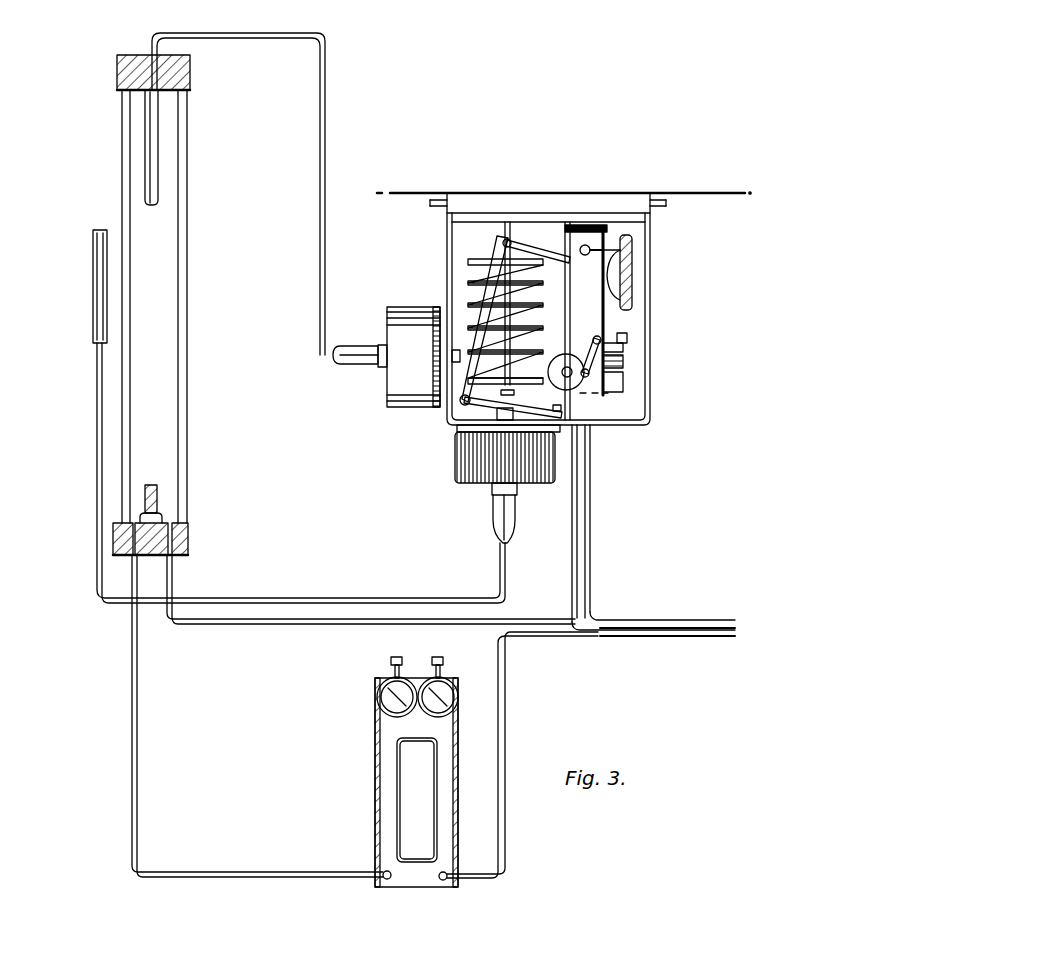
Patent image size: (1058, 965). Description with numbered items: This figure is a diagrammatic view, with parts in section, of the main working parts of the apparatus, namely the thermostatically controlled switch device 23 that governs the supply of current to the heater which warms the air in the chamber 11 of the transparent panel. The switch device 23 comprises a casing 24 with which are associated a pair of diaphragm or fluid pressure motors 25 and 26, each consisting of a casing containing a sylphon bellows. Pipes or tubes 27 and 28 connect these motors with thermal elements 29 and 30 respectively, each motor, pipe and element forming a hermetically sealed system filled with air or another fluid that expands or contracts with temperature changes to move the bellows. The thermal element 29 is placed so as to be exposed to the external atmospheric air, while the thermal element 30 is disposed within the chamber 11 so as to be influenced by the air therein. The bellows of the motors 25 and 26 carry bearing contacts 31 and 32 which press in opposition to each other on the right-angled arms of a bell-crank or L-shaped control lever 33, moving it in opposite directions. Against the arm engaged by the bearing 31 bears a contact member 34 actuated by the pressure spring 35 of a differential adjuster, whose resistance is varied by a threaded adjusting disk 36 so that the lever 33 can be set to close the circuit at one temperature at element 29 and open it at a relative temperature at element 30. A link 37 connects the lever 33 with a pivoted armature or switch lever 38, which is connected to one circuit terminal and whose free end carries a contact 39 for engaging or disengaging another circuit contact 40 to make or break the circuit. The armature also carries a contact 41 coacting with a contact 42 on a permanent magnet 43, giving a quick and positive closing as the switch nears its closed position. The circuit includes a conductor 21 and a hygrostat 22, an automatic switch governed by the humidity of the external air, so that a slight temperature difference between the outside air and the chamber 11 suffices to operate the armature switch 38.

The chamber 11 is at (170, 327).
The conductor 21 is at (577, 240).
The hygrostat 22 is at (405, 808).
The switch device 23 is at (650, 252).
The casing 24 is at (445, 247).
The fluid pressure motor 25 is at (473, 477).
The fluid pressure motor 26 is at (400, 307).
The pipe 27 is at (373, 587).
The pipe 28 is at (320, 215).
The thermal element 29 is at (92, 303).
The thermal element 30 is at (158, 175).
The bearing contact 31 is at (458, 435).
The bearing contact 32 is at (462, 340).
The control lever 33 is at (477, 275).
The contact member 34 is at (520, 383).
The pressure spring 35 is at (537, 318).
The adjusting disk 36 is at (518, 262).
The link 37 is at (543, 240).
The armature 38 is at (630, 320).
The contact 39 is at (625, 337).
The circuit contact 40 is at (620, 347).
The contact 41 is at (625, 363).
The contact 42 is at (620, 380).
The permanent magnet 43 is at (608, 393).